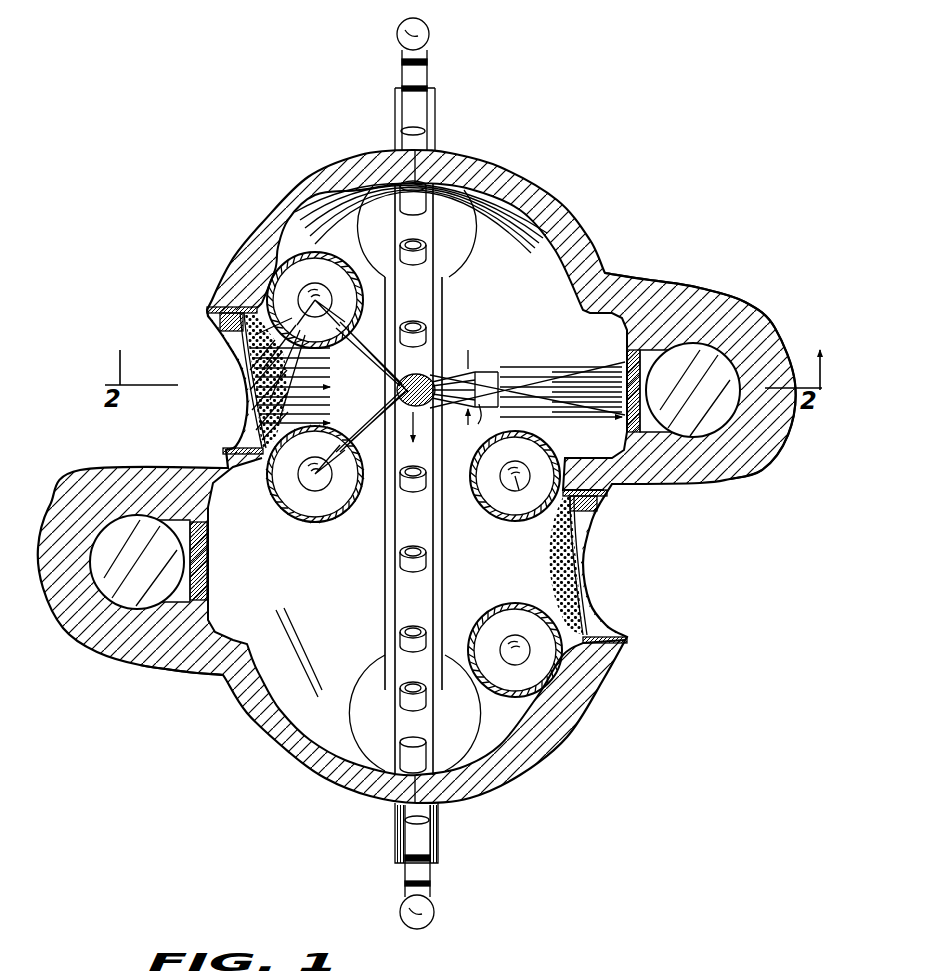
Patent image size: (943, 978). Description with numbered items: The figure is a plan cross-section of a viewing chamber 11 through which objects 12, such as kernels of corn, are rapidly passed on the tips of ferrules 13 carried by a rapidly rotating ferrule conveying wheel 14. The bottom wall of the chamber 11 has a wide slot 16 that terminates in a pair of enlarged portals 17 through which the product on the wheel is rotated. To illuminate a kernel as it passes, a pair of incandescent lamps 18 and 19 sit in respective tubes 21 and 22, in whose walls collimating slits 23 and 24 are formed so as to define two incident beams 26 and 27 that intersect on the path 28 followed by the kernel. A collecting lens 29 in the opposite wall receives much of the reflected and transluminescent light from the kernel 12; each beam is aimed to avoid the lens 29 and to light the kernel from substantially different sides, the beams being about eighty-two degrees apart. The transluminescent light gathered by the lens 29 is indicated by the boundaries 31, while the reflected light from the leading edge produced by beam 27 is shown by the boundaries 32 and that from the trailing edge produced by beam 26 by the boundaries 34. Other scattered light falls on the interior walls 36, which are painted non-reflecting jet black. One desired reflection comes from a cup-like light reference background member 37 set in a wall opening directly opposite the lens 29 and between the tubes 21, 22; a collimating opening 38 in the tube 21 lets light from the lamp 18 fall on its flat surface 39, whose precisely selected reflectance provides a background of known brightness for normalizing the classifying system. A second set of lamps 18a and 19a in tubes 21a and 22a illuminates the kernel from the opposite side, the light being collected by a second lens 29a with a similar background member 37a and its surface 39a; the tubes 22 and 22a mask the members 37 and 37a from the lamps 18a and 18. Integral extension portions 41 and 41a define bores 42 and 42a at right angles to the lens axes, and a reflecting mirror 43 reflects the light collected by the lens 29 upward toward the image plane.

The viewing chamber 11 is at (503, 172).
The object 12 is at (429, 36).
The ferrule 13 is at (427, 80).
The ferrule conveying wheel 14 is at (435, 137).
The wide slot 16 is at (441, 312).
The enlarged portals 17 is at (378, 225).
The incandescent lamp 18 is at (305, 290).
The incandescent lamp 18a is at (522, 655).
The incandescent lamp 19 is at (310, 488).
The incandescent lamp 19a is at (518, 492).
The tube 21 is at (280, 275).
The tube 21a is at (512, 695).
The tube 22 is at (320, 516).
The tube 22a is at (493, 510).
The collimating slit 23 is at (345, 290).
The collimating slit 24 is at (343, 460).
The incident beam 26 is at (368, 350).
The incident beam 27 is at (368, 430).
The path 28 is at (352, 440).
The collecting lens 29 is at (627, 412).
The second lens 29a is at (210, 560).
The boundaries 31 is at (502, 399).
The boundaries 32 is at (469, 425).
The boundaries 34 is at (468, 360).
The interior walls 36 is at (530, 236).
The light reference background member 37 is at (236, 328).
The background member 37a is at (588, 612).
The collimating opening 38 is at (262, 308).
The flat surface 39 is at (250, 318).
The flat surface 39a is at (575, 543).
The extension portion 41 is at (655, 283).
The extension portion 41a is at (205, 678).
The bore 42 is at (720, 432).
The bore 42a is at (110, 587).
The reflecting mirror 43 is at (718, 360).